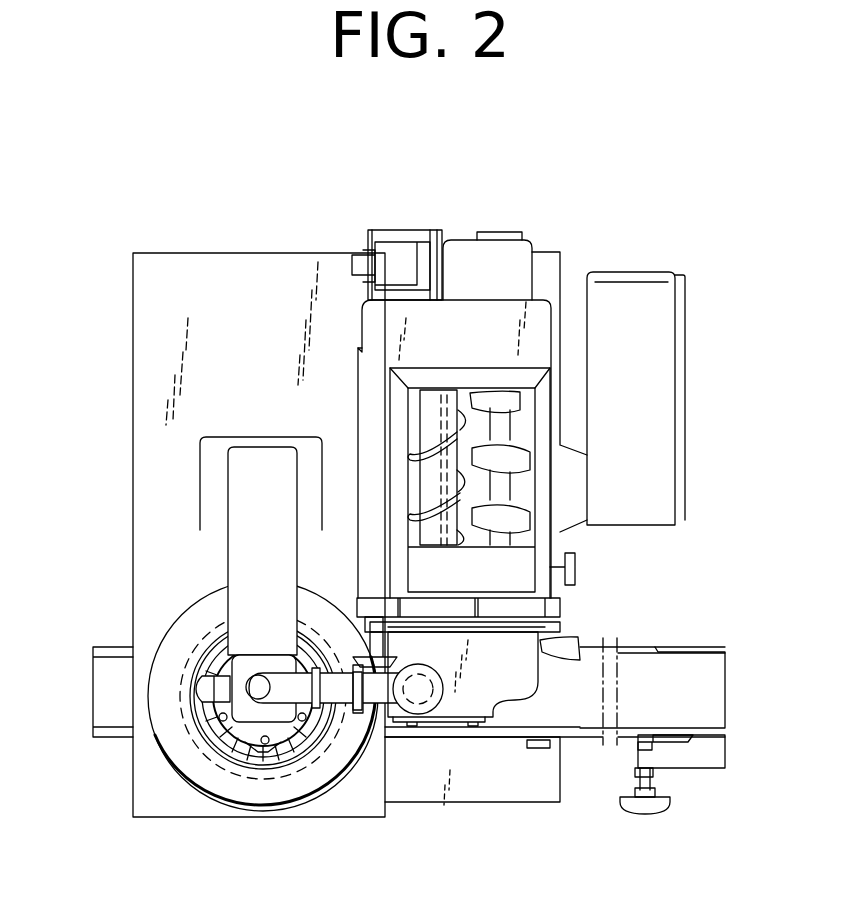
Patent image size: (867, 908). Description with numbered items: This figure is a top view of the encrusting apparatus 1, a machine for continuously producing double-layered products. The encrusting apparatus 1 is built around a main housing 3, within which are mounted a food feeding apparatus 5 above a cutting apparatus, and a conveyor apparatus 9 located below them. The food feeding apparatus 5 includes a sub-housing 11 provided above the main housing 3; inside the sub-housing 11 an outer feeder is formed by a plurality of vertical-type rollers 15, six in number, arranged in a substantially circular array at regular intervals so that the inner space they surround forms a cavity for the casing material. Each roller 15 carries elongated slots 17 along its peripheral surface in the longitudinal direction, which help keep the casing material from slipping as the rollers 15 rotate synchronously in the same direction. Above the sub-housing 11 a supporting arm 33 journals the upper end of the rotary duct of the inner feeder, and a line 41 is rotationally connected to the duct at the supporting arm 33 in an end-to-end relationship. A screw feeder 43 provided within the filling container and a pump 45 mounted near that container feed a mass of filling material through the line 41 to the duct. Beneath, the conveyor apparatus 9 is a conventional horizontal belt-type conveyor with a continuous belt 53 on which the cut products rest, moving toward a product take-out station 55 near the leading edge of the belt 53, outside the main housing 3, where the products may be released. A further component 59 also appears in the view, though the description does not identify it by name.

The encrusting apparatus 1 is at (566, 230).
The main housing 3 is at (530, 802).
The food feeding apparatus 5 is at (298, 800).
The conveyor apparatus 9 is at (632, 638).
The sub-housing 11 is at (155, 485).
The vertical-type rollers 15 is at (212, 690).
The elongated slots 17 is at (200, 640).
The supporting arm 33 is at (240, 568).
The line 41 is at (378, 740).
The screw feeder 43 is at (425, 490).
The pump 45 is at (455, 728).
The continuous belt 53 is at (590, 713).
The product take-out station 55 is at (645, 718).
The auger 59 is at (448, 385).